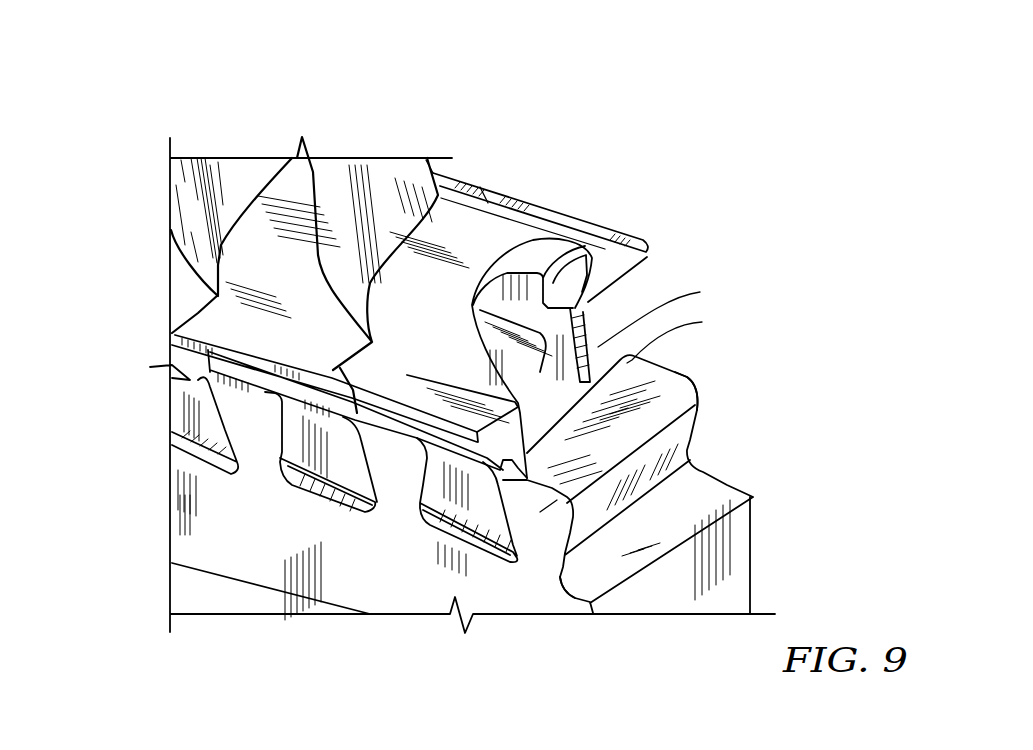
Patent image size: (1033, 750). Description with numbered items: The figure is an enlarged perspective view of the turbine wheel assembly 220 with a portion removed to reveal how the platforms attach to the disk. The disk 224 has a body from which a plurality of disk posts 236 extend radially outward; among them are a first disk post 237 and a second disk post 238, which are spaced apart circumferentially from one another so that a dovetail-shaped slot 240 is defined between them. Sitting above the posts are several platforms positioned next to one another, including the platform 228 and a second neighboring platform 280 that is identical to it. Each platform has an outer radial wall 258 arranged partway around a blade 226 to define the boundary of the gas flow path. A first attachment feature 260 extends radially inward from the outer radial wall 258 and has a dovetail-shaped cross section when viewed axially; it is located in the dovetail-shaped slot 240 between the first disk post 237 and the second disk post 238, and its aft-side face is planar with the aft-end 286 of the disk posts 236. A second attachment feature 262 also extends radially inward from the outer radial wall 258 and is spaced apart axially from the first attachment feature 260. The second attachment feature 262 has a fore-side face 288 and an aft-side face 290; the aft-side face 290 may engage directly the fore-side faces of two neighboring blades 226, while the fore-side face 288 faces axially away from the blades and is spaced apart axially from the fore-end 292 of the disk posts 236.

The turbine wheel assembly 220 is at (133, 85).
The disk 224 is at (184, 545).
The blade 226 is at (400, 174).
The platform 228 is at (516, 160).
The disk posts 236 is at (735, 434).
The first disk post 237 is at (539, 567).
The second disk post 238 is at (398, 513).
The dovetail-shaped slot 240 is at (445, 519).
The outer radial wall 258 is at (466, 241).
The first attachment feature 260 is at (488, 518).
The second attachment feature 262 is at (645, 299).
The second neighboring platform 280 is at (265, 212).
The aft-end of the disk posts 286 is at (577, 590).
The fore-side face 288 is at (672, 314).
The aft-side face 290 is at (687, 337).
The fore-end of the disk posts 292 is at (680, 378).